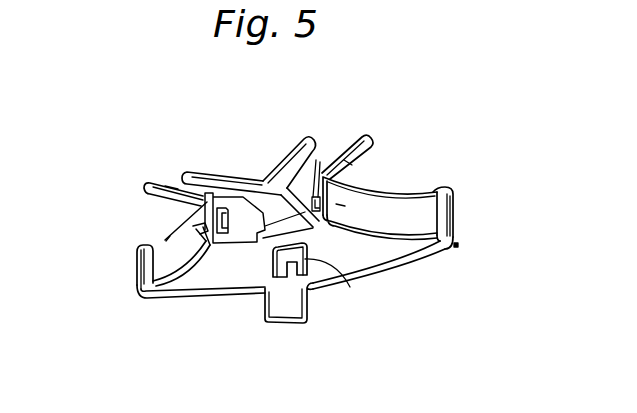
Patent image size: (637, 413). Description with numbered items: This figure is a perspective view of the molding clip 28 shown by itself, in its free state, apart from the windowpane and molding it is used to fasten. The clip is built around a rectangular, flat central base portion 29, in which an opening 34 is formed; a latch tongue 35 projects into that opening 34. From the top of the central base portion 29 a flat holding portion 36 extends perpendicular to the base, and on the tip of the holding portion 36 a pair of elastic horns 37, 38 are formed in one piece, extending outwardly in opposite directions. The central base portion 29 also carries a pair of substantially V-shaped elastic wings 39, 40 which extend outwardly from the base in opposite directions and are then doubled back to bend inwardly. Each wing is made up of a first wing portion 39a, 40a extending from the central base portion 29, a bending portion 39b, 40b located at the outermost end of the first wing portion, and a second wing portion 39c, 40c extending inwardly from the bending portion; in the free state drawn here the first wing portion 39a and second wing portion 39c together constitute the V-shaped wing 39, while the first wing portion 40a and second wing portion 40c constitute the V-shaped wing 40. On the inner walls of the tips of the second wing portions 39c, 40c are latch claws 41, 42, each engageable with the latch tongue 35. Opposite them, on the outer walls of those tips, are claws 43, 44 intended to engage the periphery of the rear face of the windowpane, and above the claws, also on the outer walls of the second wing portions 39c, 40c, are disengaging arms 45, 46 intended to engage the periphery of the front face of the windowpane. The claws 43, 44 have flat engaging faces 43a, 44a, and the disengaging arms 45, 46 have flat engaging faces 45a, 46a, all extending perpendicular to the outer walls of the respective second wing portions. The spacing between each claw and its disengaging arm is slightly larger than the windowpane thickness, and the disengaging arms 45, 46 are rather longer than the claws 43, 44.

The molding clip 28 is at (402, 188).
The central base portion 29 is at (295, 322).
The opening 34 is at (341, 279).
The latch tongue 35 is at (272, 268).
The holding portion 36 is at (316, 160).
The elastic horn 37 is at (206, 173).
The elastic horn 38 is at (297, 160).
The elastic wing 39 is at (136, 291).
The first wing portion 39a is at (203, 279).
The bending portion 39b is at (137, 259).
The second wing portion 39c is at (167, 240).
The elastic wing 40 is at (458, 246).
The first wing portion 40a is at (397, 258).
The bending portion 40b is at (445, 205).
The second wing portion 40c is at (417, 207).
The latch claw 41 is at (228, 236).
The latch claw 42 is at (318, 197).
The claw 43 is at (194, 233).
The flat engaging face 43a is at (196, 212).
The claw 44 is at (351, 224).
The flat engaging face 44a is at (338, 208).
The disengaging arm 45 is at (160, 183).
The flat engaging face 45a is at (179, 183).
The disengaging arm 46 is at (370, 147).
The flat engaging face 46a is at (348, 165).